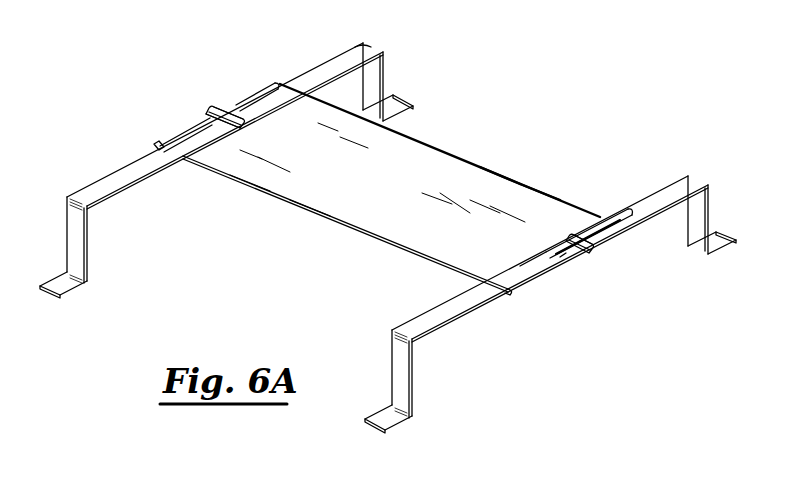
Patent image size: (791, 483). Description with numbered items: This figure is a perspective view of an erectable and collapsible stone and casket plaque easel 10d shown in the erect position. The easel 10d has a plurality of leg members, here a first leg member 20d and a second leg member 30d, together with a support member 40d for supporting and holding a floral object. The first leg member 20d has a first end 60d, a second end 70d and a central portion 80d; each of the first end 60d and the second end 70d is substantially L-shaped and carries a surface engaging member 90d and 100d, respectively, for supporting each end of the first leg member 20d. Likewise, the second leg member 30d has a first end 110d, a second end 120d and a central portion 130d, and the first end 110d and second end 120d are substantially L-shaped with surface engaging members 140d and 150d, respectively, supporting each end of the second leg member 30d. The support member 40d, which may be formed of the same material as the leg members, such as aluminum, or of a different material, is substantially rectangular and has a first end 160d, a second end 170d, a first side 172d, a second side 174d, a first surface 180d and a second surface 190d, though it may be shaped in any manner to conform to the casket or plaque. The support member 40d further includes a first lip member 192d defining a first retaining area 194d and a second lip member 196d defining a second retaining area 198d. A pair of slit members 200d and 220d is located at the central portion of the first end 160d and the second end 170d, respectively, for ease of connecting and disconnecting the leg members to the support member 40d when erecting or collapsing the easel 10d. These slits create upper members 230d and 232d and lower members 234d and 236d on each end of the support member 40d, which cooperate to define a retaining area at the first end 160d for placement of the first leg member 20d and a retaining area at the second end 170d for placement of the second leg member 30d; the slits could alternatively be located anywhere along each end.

The stone and casket plaque easel 10d is at (575, 75).
The first leg member 20d is at (108, 173).
The second leg member 30d is at (450, 325).
The support member 40d is at (447, 152).
The first end 60d is at (66, 222).
The second end 70d is at (388, 70).
The central portion 80d is at (200, 117).
The surface engaging member 90d is at (69, 290).
The surface engaging member 100d is at (411, 118).
The first end 110d is at (389, 370).
The second end 120d is at (711, 205).
The central portion 130d is at (580, 237).
The surface engaging member 140d is at (396, 421).
The surface engaging member 150d is at (728, 256).
The first end 160d is at (158, 144).
The second end 170d is at (624, 241).
The first side 172d is at (253, 190).
The second side 174d is at (541, 190).
The first surface 180d is at (501, 176).
The second surface 190d is at (306, 213).
The first lip member 192d is at (282, 84).
The first retaining area 194d is at (200, 112).
The second lip member 196d is at (563, 258).
The second retaining area 198d is at (578, 254).
The slit member 200d is at (213, 110).
The slit member 220d is at (573, 265).
The upper member 230d is at (272, 82).
The upper member 232d is at (545, 284).
The lower member 234d is at (178, 130).
The lower member 236d is at (598, 252).